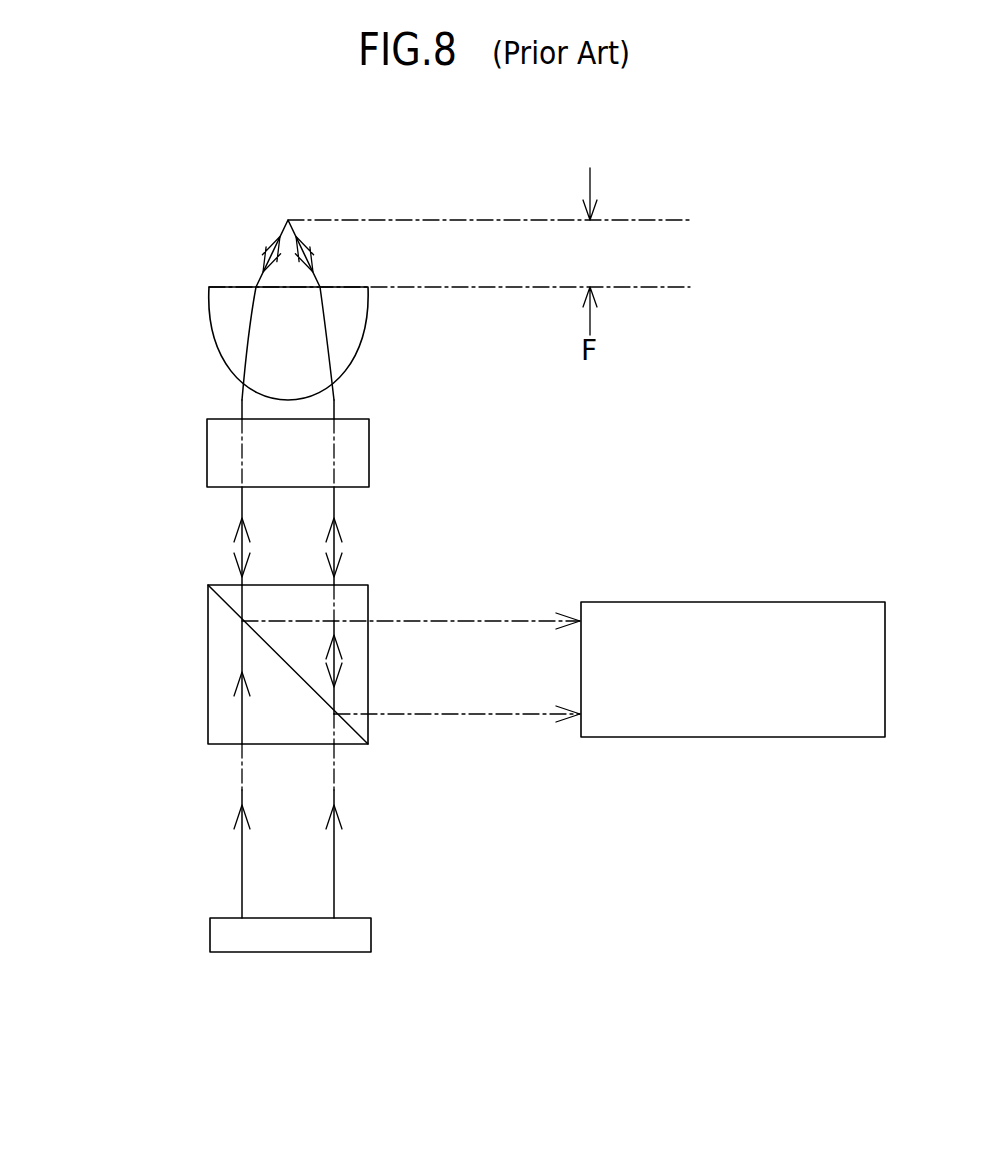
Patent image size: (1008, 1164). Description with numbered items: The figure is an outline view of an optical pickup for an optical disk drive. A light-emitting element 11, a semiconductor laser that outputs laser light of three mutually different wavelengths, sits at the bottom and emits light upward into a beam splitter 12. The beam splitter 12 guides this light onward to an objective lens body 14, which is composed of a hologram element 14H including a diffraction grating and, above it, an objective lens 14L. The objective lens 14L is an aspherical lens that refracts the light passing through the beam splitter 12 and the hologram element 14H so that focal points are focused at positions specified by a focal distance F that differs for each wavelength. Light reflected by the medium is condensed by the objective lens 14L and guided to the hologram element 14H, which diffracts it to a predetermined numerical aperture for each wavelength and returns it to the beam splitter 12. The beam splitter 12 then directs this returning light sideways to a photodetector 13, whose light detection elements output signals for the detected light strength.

The light-emitting element 11 is at (210, 932).
The beam splitter 12 is at (208, 666).
The photodetector 13 is at (730, 602).
The objective lens body 14 is at (247, 387).
The objective lens 14L is at (366, 330).
The hologram element 14H is at (369, 452).